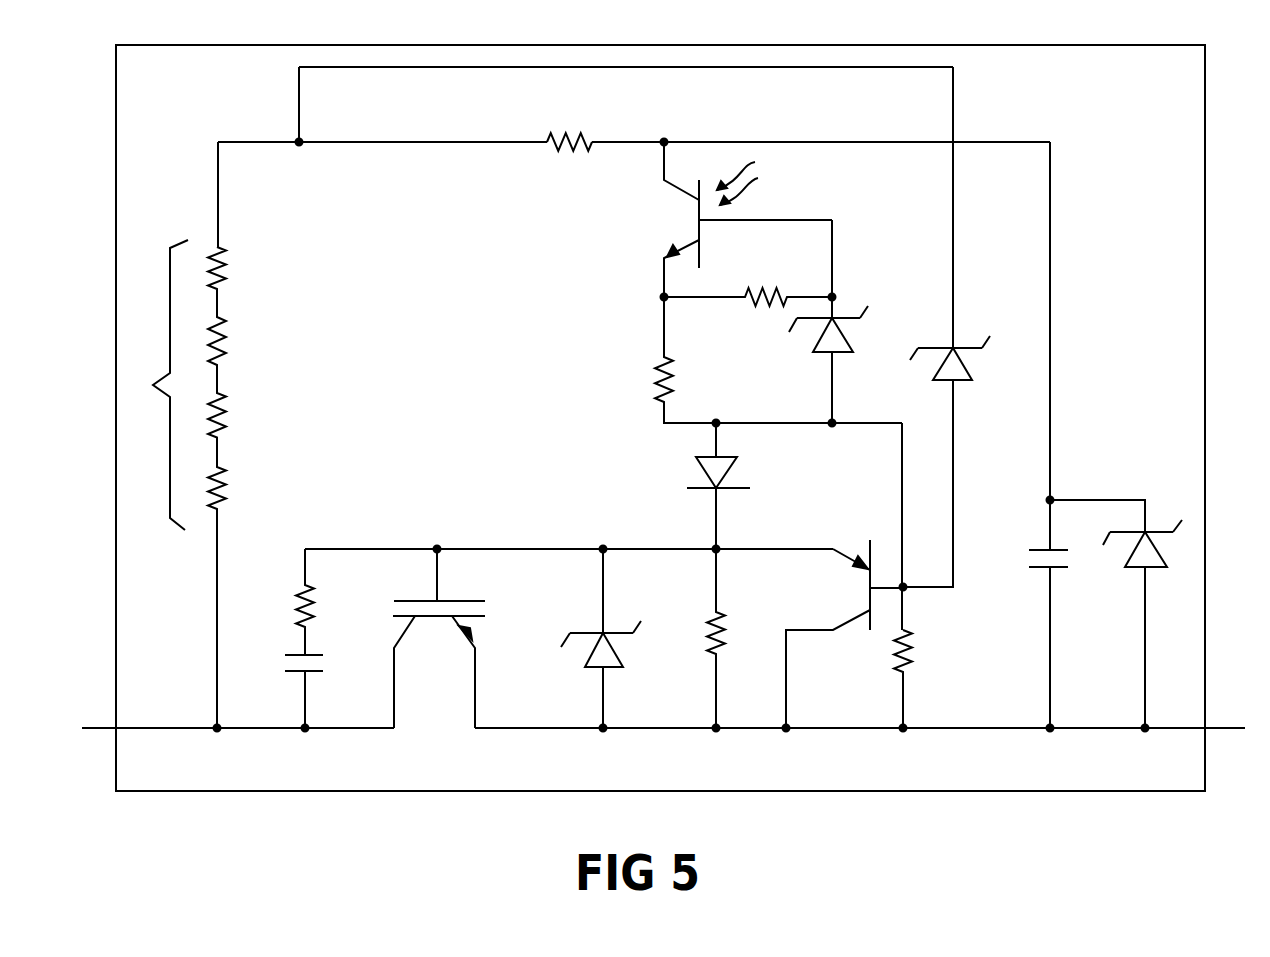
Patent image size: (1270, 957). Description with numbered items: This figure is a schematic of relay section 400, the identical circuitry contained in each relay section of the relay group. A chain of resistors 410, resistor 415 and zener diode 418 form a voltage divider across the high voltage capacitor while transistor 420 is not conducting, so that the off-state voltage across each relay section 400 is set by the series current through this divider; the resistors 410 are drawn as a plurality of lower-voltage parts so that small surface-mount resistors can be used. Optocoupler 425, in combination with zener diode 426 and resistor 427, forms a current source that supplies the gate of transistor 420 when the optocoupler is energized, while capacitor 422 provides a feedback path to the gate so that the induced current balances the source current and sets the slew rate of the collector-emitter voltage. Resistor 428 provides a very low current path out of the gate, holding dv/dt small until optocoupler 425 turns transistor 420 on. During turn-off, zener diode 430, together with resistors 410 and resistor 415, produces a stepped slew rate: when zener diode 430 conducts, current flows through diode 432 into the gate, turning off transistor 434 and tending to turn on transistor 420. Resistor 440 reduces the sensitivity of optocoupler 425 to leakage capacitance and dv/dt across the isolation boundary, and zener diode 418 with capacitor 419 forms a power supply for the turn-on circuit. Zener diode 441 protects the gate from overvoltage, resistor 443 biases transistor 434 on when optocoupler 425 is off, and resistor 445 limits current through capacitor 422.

The relay section 400 is at (802, 777).
The resistors 410 is at (152, 387).
The resistor 415 is at (568, 121).
The zener diode 418 is at (1163, 547).
The capacitor 419 is at (1025, 560).
The transistor 420 is at (467, 598).
The capacitor 422 is at (282, 663).
The optocoupler 425 is at (683, 210).
The zener diode 426 is at (863, 337).
The resistor 427 is at (633, 385).
The resistor 428 is at (737, 620).
The zener diode 430 is at (970, 363).
The diode 432 is at (693, 475).
The transistor 434 is at (880, 547).
The resistor 440 is at (762, 282).
The zener diode 441 is at (622, 650).
The resistor 443 is at (912, 660).
The resistor 445 is at (318, 602).